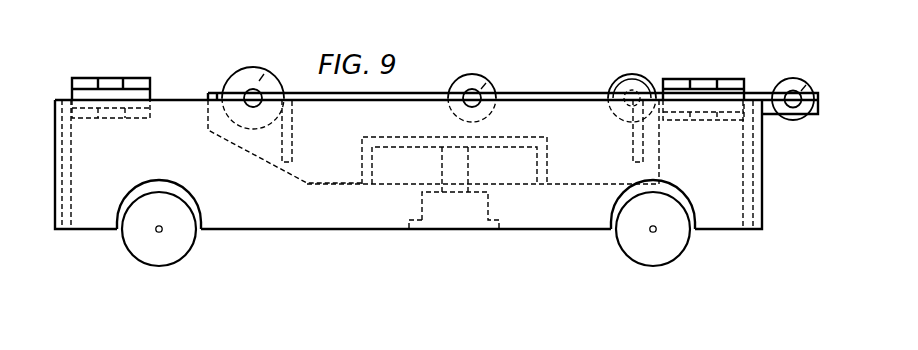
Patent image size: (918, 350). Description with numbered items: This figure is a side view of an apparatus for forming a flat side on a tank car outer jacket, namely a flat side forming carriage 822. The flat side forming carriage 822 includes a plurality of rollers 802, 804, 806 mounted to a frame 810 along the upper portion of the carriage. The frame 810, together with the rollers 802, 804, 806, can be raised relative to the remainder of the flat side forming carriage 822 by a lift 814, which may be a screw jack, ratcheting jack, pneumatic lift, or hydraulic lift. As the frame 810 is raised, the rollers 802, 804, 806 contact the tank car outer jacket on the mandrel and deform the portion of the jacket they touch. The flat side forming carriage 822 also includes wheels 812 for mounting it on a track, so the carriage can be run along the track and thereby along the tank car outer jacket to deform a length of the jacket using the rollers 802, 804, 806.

The roller 802 is at (253, 67).
The roller 804 is at (470, 74).
The roller 806 is at (791, 78).
The frame 810 is at (212, 93).
The wheels 812 is at (155, 266).
The lift 814 is at (422, 200).
The flat side forming carriage 822 is at (568, 71).